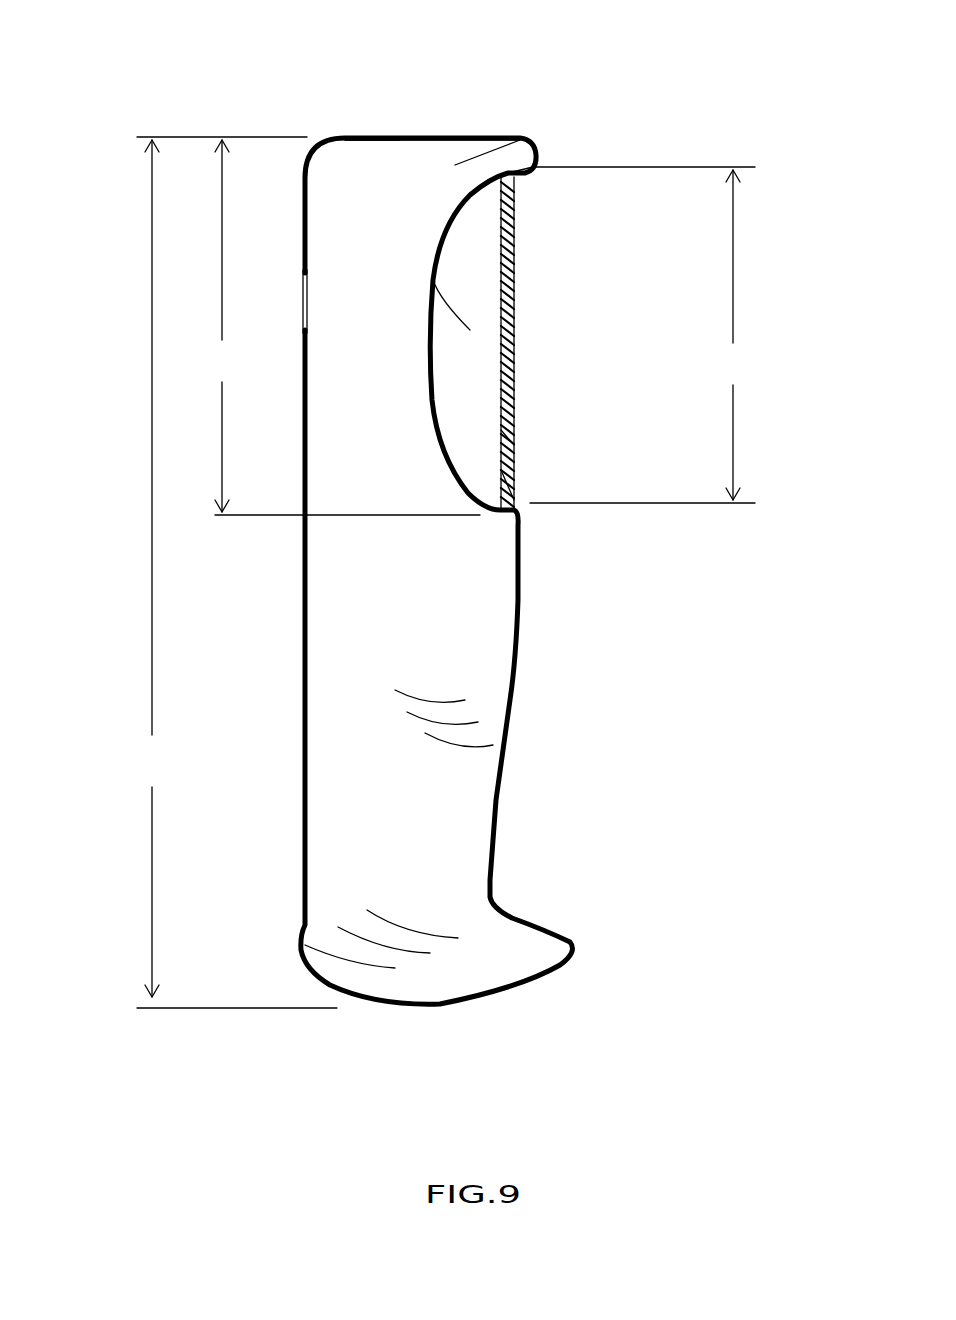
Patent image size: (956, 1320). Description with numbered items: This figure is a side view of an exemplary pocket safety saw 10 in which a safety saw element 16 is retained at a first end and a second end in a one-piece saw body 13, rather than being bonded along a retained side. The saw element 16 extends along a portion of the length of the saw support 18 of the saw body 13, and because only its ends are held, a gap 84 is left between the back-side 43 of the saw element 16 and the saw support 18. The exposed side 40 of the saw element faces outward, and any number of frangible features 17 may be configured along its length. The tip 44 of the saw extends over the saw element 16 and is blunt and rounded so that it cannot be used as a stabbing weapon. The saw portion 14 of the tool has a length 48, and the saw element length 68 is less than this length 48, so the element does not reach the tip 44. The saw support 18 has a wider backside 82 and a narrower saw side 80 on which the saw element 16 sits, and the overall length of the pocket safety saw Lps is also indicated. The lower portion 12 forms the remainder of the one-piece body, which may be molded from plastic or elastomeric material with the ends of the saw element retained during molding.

The pocket safety saw 10 is at (610, 648).
The lower portion 12 is at (458, 847).
The saw body 13 is at (494, 572).
The saw portion 14 is at (520, 140).
The safety saw element 16 is at (510, 358).
The frangible features 17 is at (520, 200).
The saw support 18 is at (365, 165).
The exposed side 40 is at (508, 468).
The back-side of saw element 43 is at (497, 352).
The tip 44 is at (406, 138).
The length of the saw portion 48 is at (308, 326).
The saw element length 68 is at (642, 335).
The saw side 80 is at (505, 440).
The backside of the saw support 82 is at (303, 263).
The gap 84 is at (478, 281).
The overall length of the pocket safety saw Lps is at (235, 574).